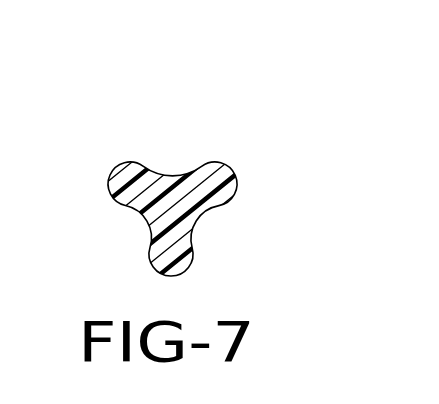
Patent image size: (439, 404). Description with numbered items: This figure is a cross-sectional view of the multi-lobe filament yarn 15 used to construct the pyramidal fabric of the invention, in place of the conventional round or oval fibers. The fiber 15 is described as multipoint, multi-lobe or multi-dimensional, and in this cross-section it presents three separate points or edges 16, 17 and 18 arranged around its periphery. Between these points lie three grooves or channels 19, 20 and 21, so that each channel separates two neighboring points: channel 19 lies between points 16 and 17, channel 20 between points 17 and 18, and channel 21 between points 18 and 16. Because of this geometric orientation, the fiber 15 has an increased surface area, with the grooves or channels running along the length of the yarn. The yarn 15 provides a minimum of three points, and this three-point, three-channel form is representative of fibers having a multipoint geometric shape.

The multi-lobe filament yarn 15 is at (108, 112).
The point or edge 16 is at (113, 165).
The point or edge 17 is at (238, 178).
The point or edge 18 is at (180, 272).
The groove or channel 19 is at (175, 175).
The groove or channel 20 is at (202, 214).
The groove or channel 21 is at (148, 223).